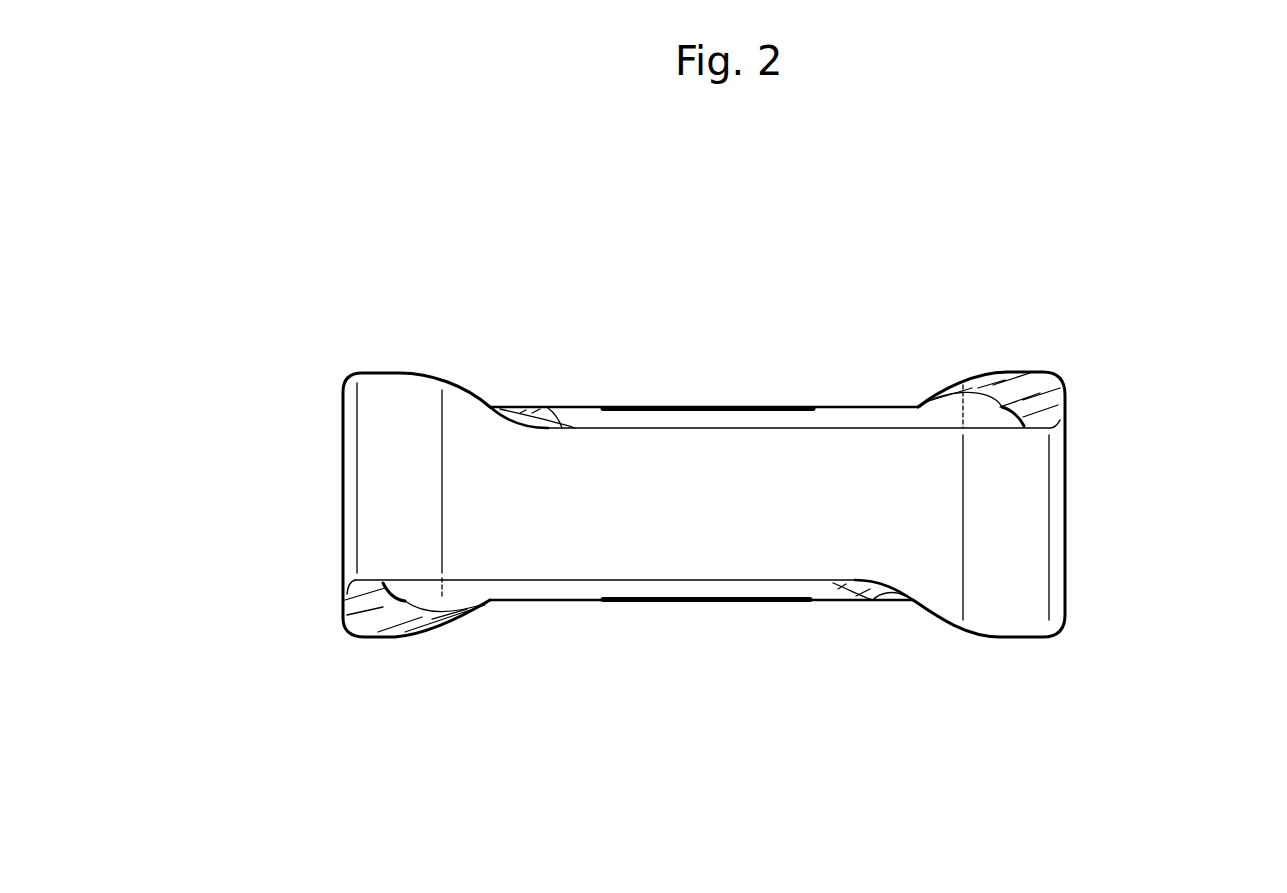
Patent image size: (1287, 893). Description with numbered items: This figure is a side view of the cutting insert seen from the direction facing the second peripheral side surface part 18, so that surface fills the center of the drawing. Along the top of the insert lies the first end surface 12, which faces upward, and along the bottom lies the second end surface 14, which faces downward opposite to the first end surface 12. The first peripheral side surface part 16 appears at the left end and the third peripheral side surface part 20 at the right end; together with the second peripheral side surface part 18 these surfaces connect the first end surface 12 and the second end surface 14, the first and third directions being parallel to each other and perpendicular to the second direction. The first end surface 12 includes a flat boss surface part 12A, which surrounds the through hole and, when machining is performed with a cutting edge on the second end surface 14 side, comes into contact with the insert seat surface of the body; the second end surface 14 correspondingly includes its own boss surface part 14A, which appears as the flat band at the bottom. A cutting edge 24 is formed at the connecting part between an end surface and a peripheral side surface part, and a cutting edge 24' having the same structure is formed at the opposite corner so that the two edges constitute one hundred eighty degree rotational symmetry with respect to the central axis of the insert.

The first end surface 12 is at (728, 400).
The boss surface part 12A is at (843, 405).
The second end surface 14 is at (770, 610).
The boss surface part 14A is at (565, 603).
The first peripheral side surface part 16 is at (334, 517).
The second peripheral side surface part 18 is at (690, 510).
The third peripheral side surface part 20 is at (1075, 511).
The cutting edge 24 is at (374, 454).
The cutting edge 24' is at (1047, 361).